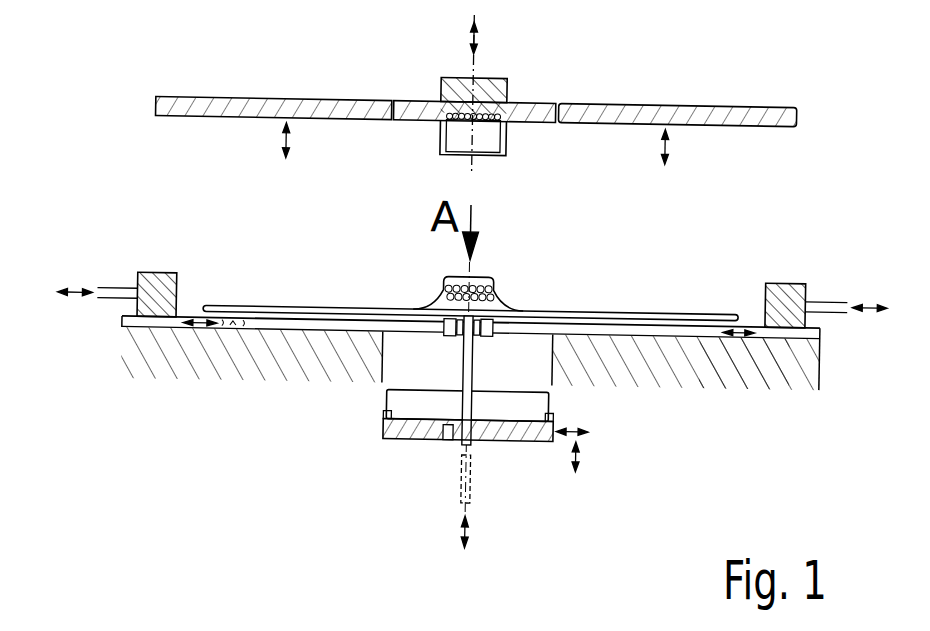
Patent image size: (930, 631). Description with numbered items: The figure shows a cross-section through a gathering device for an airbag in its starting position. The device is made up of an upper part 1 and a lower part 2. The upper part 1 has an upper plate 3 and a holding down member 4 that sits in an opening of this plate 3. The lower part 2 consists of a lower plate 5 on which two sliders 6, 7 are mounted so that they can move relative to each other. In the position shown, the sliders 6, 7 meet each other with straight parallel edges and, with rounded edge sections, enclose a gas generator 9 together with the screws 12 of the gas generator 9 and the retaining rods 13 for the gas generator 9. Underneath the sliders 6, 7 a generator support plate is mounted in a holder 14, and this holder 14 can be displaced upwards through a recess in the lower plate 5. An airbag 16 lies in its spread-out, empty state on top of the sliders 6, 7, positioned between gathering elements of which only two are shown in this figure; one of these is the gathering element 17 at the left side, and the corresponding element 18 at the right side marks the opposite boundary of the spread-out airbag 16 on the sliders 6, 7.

The upper part 1 is at (660, 53).
The lower part 2 is at (692, 467).
The upper plate 3 is at (755, 50).
The holding down member 4 is at (562, 48).
The lower plate 5 is at (780, 452).
The slider 6 is at (245, 460).
The slider 7 is at (625, 443).
The gas generator 9 is at (537, 247).
The screws 12 is at (352, 470).
The retaining rods 13 is at (413, 480).
The holder 14 is at (543, 493).
The airbag 16 is at (620, 255).
The gathering element 17 is at (158, 270).
The right stop block 18 is at (807, 227).